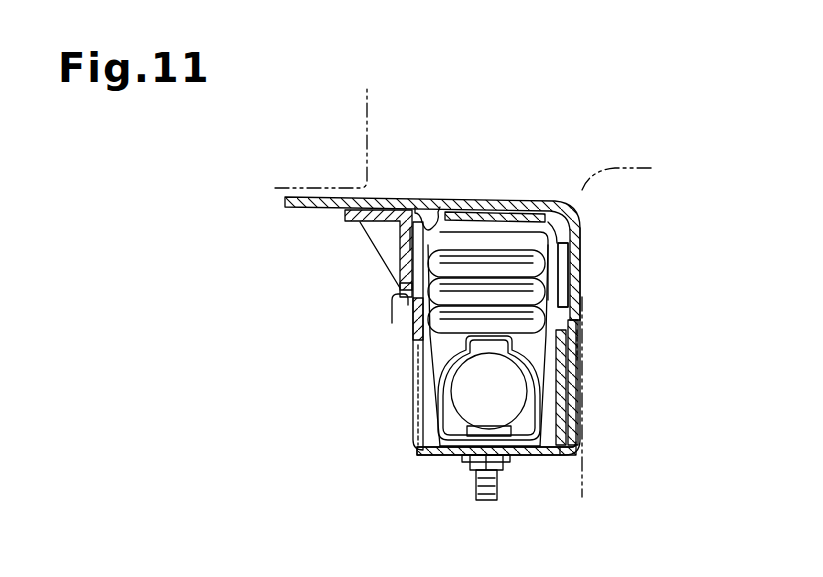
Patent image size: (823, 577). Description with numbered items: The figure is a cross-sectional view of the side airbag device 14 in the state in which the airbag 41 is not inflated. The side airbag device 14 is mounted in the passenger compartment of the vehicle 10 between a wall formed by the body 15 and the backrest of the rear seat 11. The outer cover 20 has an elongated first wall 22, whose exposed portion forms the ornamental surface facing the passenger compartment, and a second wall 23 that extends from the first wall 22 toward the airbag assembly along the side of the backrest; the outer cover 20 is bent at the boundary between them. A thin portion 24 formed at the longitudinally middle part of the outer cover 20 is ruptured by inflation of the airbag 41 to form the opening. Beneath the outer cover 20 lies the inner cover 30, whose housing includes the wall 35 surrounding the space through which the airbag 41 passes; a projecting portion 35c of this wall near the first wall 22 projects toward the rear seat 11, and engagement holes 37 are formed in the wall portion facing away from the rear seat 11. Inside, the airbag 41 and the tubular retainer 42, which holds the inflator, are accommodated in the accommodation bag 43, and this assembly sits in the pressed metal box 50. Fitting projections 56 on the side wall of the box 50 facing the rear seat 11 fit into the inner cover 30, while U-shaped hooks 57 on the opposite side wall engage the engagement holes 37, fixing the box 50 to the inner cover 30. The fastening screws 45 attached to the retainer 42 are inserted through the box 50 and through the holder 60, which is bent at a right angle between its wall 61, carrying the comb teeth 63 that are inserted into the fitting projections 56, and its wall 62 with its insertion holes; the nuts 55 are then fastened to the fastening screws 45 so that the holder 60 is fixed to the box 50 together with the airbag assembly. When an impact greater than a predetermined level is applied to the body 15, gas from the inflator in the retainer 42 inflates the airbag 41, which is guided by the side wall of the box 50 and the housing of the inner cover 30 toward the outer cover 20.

The vehicle 10 is at (656, 65).
The rear seat 11 is at (624, 160).
The side airbag device 14 is at (536, 100).
The body 15 is at (384, 78).
The outer cover 20 is at (479, 203).
The first wall 22 is at (432, 222).
The second wall 23 is at (586, 228).
The thin portion 24 is at (420, 203).
The inner cover 30 is at (380, 246).
The wall 35 is at (578, 300).
The projecting portion 35c is at (561, 336).
The engagement holes 37 is at (400, 290).
The airbag 41 is at (497, 256).
The retainer 42 is at (440, 402).
The accommodation bag 43 is at (575, 266).
The fastening screws 45 is at (487, 503).
The box 50 is at (416, 450).
The nuts 55 is at (470, 466).
The fitting projections 56 is at (592, 350).
The hooks 57 is at (392, 315).
The holder 60 is at (584, 438).
The wall 61 is at (556, 387).
The wall 62 is at (530, 458).
The comb teeth 63 is at (580, 385).